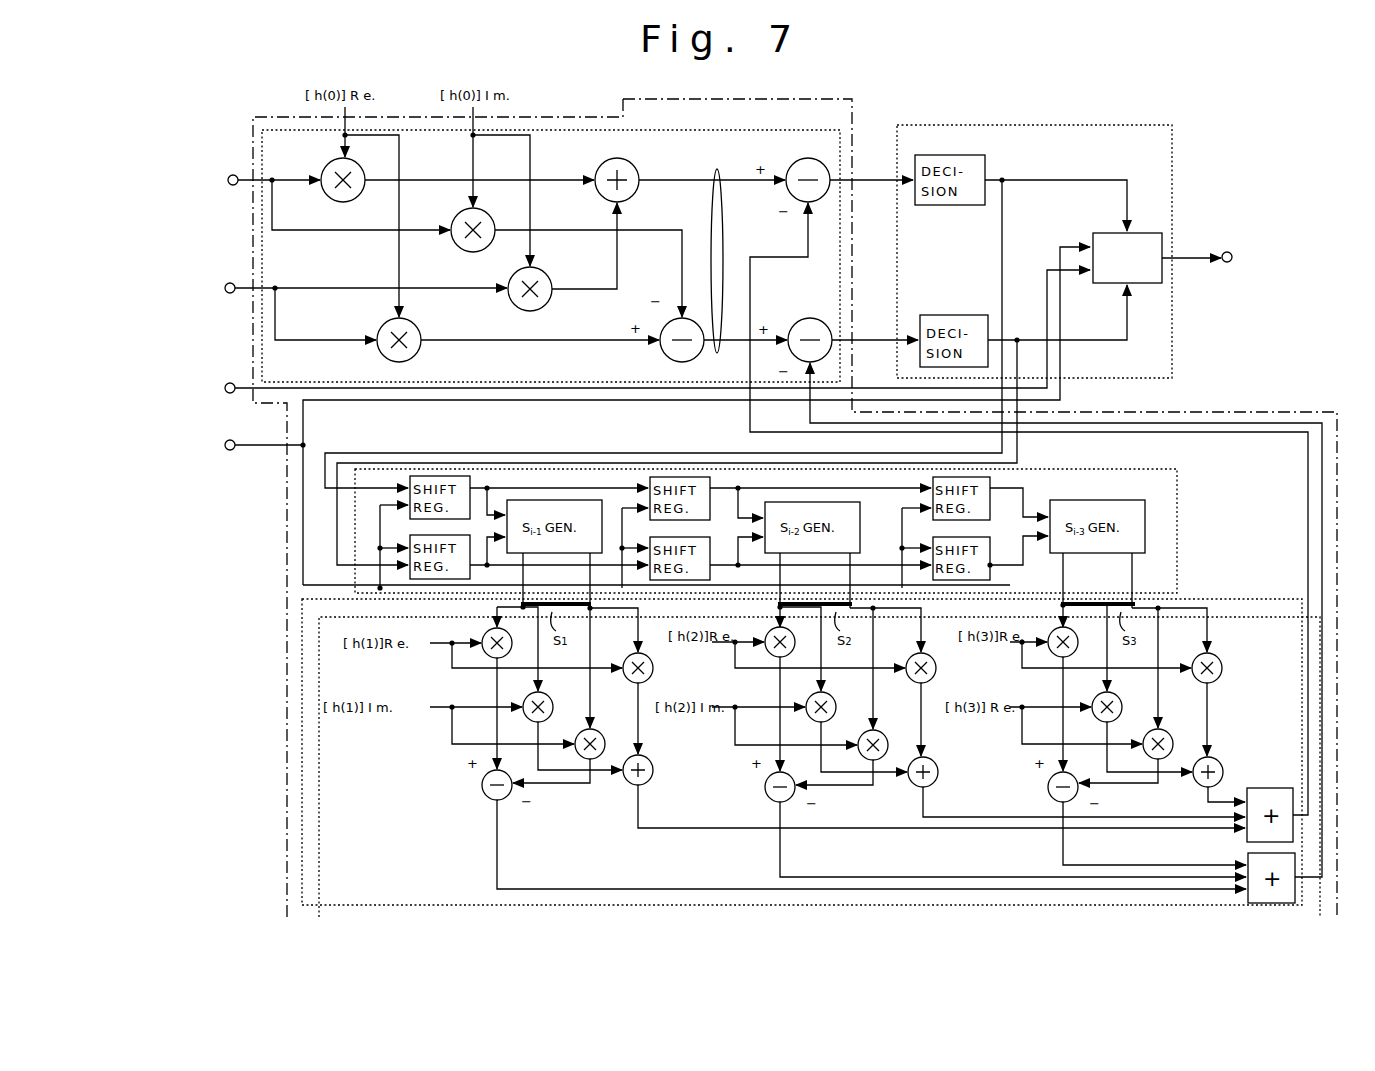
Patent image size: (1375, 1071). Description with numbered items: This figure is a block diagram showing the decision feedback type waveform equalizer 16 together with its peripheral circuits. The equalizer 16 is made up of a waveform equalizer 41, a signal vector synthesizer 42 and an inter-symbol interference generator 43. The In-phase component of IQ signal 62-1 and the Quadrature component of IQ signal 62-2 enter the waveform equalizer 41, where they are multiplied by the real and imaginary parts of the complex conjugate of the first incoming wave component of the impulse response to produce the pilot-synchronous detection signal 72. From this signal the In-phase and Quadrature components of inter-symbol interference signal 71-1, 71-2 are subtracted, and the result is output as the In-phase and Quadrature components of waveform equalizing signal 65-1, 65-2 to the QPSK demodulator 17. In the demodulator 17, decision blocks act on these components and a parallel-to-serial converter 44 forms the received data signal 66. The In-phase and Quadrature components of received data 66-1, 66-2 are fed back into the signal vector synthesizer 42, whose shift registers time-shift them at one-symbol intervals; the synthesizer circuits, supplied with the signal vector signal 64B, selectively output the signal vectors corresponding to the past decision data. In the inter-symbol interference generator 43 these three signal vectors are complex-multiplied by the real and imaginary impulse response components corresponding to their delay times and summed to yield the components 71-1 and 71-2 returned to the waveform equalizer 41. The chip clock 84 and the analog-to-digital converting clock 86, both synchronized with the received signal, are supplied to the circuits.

The decision feedback type waveform equalizer 16 is at (642, 99).
The waveform equalizer 41 is at (700, 131).
The QPSK demodulator 17 is at (897, 132).
The parallel-to-serial converter 44 is at (1094, 236).
The received data signal 66 is at (1250, 257).
The In-phase component of IQ signal 62-1 is at (210, 170).
The Quadrature component of IQ signal 62-2 is at (303, 278).
The analog-to-digital converting clock 86 is at (595, 340).
The chip clock 84 is at (595, 416).
The In-phase component of waveform equalizing signal 65-1 is at (871, 171).
The Quadrature component of waveform equalizing signal 65-2 is at (875, 331).
The In-phase component of inter-symbol interference signal 71-1 is at (1028, 509).
The Quadrature component of inter-symbol interference signal 71-2 is at (1041, 620).
The pilot-synchronous detection signal 72 is at (711, 261).
The In-phase component of received data 66-1 is at (322, 478).
The Quadrature component of received data 66-2 is at (335, 553).
The signal vector synthesizer 42 is at (1029, 470).
The inter-symbol interference generator 43 is at (1187, 599).
The signal vector signal 64B is at (828, 580).